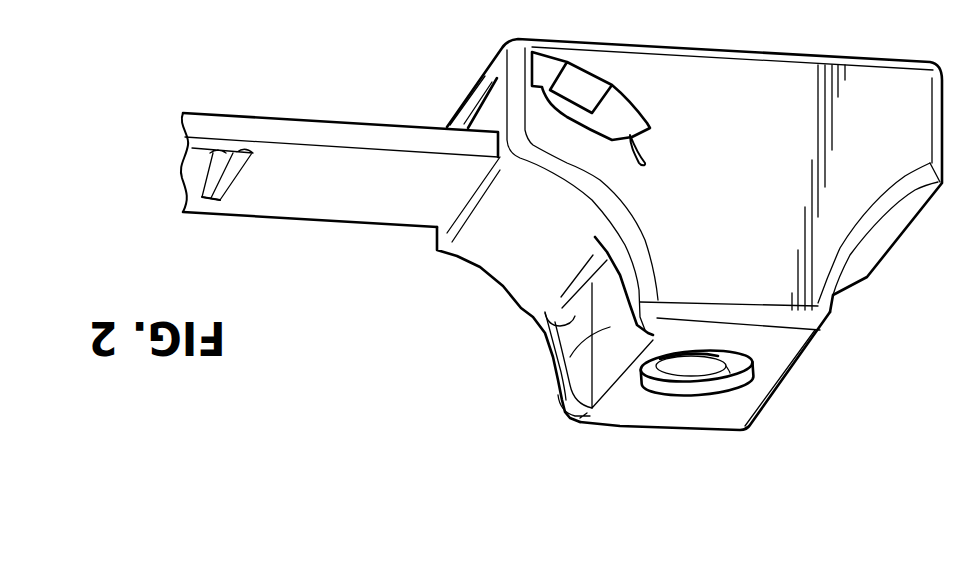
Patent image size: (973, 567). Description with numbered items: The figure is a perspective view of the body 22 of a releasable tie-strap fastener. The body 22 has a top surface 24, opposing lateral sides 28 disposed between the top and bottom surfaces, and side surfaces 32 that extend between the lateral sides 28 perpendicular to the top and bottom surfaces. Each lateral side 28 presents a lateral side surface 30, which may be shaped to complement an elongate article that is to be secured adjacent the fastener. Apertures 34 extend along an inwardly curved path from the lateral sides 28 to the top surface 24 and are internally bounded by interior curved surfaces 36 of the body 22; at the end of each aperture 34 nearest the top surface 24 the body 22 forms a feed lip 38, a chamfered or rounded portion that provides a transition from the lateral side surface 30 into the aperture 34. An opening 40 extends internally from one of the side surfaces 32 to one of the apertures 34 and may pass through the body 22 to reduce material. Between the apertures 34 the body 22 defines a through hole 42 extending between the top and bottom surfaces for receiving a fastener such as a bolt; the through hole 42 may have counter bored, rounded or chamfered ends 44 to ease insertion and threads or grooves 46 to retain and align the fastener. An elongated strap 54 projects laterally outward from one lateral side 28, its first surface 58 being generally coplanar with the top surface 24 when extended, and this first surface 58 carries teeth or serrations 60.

The body 22 is at (610, 425).
The top surface 24 is at (727, 418).
The lateral sides 28 is at (489, 78).
The lateral side surfaces 30 is at (850, 278).
The side surfaces 32 is at (753, 77).
The apertures 34 is at (470, 113).
The interior curved surfaces 36 is at (562, 383).
The feed lip 38 is at (562, 298).
The opening 40 is at (533, 67).
The through hole 42 is at (697, 390).
The counter bored, rounded, and/or chamfered ends 44 is at (670, 388).
The threads or grooves 46 is at (730, 373).
The elongated strap 54 is at (371, 223).
The first surface 58 is at (292, 187).
The teeth or serrations 60 is at (243, 151).